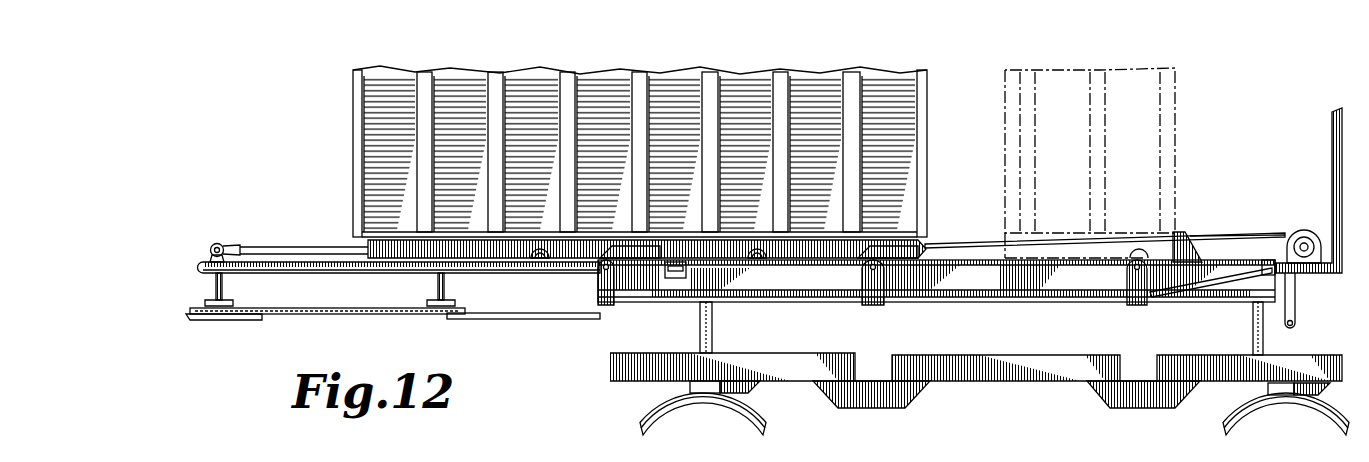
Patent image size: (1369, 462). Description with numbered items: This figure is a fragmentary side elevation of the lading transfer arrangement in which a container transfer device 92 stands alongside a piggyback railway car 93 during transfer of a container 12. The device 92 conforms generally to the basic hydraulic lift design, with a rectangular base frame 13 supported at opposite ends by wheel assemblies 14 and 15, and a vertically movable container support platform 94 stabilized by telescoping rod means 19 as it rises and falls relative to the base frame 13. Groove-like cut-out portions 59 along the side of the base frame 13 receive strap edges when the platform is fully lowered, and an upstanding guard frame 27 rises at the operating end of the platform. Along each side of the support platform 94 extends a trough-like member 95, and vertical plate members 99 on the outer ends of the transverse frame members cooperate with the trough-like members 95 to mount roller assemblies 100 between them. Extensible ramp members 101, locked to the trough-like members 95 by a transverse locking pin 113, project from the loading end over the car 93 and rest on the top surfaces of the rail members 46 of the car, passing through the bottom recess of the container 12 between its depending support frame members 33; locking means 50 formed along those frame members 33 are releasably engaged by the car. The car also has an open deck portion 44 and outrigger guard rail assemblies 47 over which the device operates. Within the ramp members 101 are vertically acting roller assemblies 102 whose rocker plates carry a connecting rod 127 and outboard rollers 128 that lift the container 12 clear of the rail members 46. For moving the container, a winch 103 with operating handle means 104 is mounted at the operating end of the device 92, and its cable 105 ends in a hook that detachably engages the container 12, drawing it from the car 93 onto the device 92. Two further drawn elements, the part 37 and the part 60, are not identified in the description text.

The container 12 is at (353, 92).
The base frame 13 is at (958, 220).
The front wheel assembly 14 is at (189, 258).
The wheel assembly 15 is at (540, 237).
The telescoping rod means 19 is at (713, 335).
The upstanding guard frame 27 is at (1332, 131).
The depending support frame members 33 is at (372, 252).
The stop wedge 37 is at (1187, 238).
The open deck portion 44 is at (323, 312).
The rail members 46 is at (223, 291).
The outrigger guard rail assemblies 47 is at (500, 319).
The locking means 50 is at (538, 251).
The groove-like cut-out portions 59 is at (862, 346).
The suspension bracket 60 is at (920, 392).
The container transfer device 92 is at (1236, 200).
The piggyback railway car 93 is at (232, 181).
The container support platform 94 is at (968, 261).
The trough-like member 95 is at (763, 273).
The vertical plate members 99 is at (598, 283).
The roller assemblies 100 is at (638, 257).
The extensible ramp members 101 is at (302, 276).
The vertically acting roller assemblies 102 is at (238, 240).
The winch 103 is at (1310, 226).
The operating handle means 104 is at (1297, 318).
The cable 105 is at (1212, 237).
The transverse locking pin 113 is at (668, 283).
The connecting rod 127 is at (300, 247).
The outboard rollers 128 is at (224, 245).